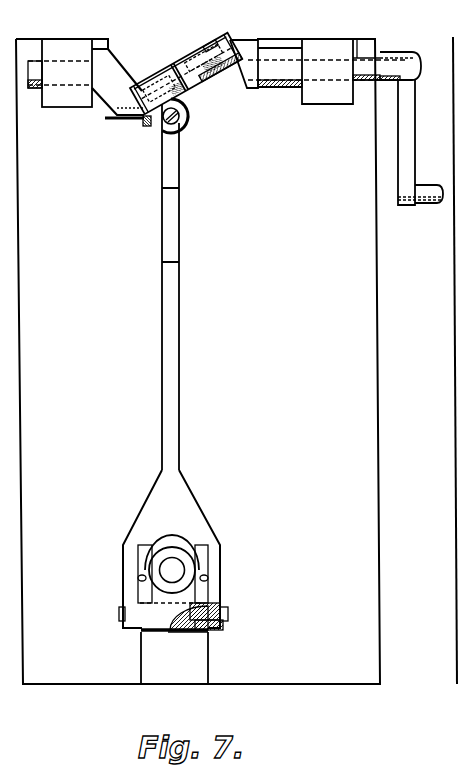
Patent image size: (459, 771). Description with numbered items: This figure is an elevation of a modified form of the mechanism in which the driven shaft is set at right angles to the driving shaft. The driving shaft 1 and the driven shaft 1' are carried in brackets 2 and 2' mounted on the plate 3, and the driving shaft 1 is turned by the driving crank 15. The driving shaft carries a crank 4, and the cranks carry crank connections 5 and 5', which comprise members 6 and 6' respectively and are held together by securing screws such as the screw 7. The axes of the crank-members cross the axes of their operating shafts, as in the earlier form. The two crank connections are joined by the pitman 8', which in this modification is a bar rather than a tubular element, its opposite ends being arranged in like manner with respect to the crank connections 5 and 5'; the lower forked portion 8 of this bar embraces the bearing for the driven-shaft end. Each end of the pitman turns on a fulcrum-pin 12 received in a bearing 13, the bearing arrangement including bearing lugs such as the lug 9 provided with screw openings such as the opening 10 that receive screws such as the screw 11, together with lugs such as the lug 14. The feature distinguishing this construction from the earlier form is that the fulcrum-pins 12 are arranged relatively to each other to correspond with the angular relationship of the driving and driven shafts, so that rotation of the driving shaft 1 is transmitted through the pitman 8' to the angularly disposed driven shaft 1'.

The driving shaft 1 is at (319, 85).
The driven shaft 1' is at (172, 570).
The bracket 2 is at (192, 73).
The bracket 2' is at (184, 658).
The plate 3 is at (198, 361).
The crank 4 is at (233, 58).
The crank connection 5 is at (172, 68).
The crank connection 5' is at (173, 563).
The member of crank connection 6 is at (186, 64).
The member of crank connection 6' is at (220, 79).
The securing screw 7 is at (213, 46).
The fork 8 is at (178, 550).
The pitman 8' is at (182, 329).
The bearing lug 9 is at (172, 163).
The screw opening 10 is at (223, 604).
The screw 11 is at (228, 619).
The fulcrum-pin 12 is at (183, 121).
The bearing 13 is at (173, 636).
The lug 14 is at (149, 122).
The driving crank 15 is at (413, 136).